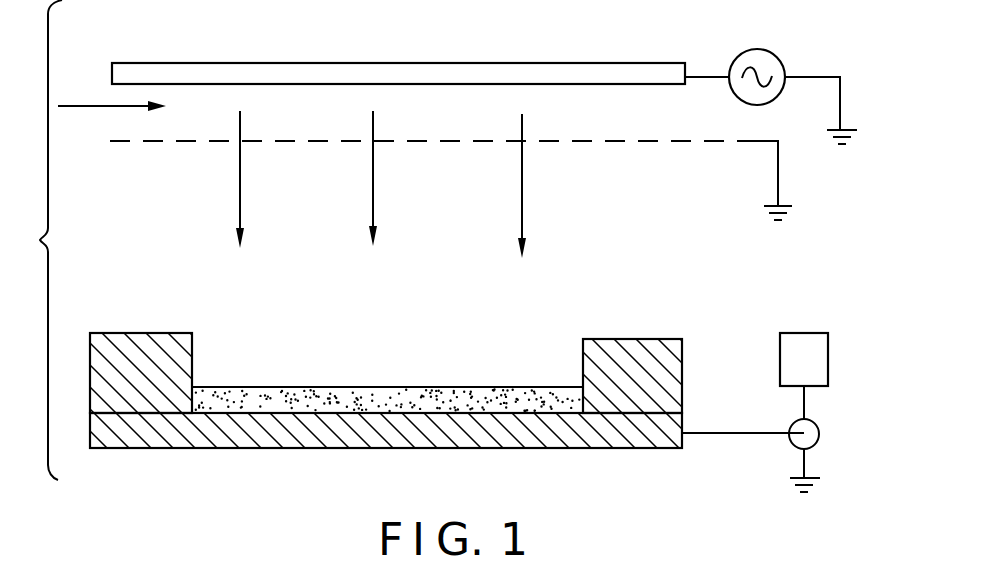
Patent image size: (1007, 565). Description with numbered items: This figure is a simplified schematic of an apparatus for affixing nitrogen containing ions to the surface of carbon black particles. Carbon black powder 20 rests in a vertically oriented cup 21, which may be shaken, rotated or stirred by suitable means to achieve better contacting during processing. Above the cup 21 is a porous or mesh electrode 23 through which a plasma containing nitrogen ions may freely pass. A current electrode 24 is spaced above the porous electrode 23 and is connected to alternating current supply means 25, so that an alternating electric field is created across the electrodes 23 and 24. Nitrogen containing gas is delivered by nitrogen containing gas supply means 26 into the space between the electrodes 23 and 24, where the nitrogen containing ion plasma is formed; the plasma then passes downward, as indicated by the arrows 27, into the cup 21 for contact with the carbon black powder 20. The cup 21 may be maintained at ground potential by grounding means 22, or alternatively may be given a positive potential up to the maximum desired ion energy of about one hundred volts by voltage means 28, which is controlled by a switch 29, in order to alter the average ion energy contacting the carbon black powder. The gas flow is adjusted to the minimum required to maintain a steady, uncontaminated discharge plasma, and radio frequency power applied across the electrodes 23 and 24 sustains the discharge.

The carbon black powder 20 is at (505, 387).
The cup 21 is at (682, 380).
The grounding means 22 is at (803, 462).
The porous or mesh electrode 23 is at (602, 145).
The current electrode 24 is at (635, 85).
The alternating current supply means 25 is at (778, 58).
The nitrogen containing gas supply means 26 is at (104, 108).
The arrows 27 is at (522, 196).
The voltage means 28 is at (827, 340).
The switch 29 is at (819, 430).